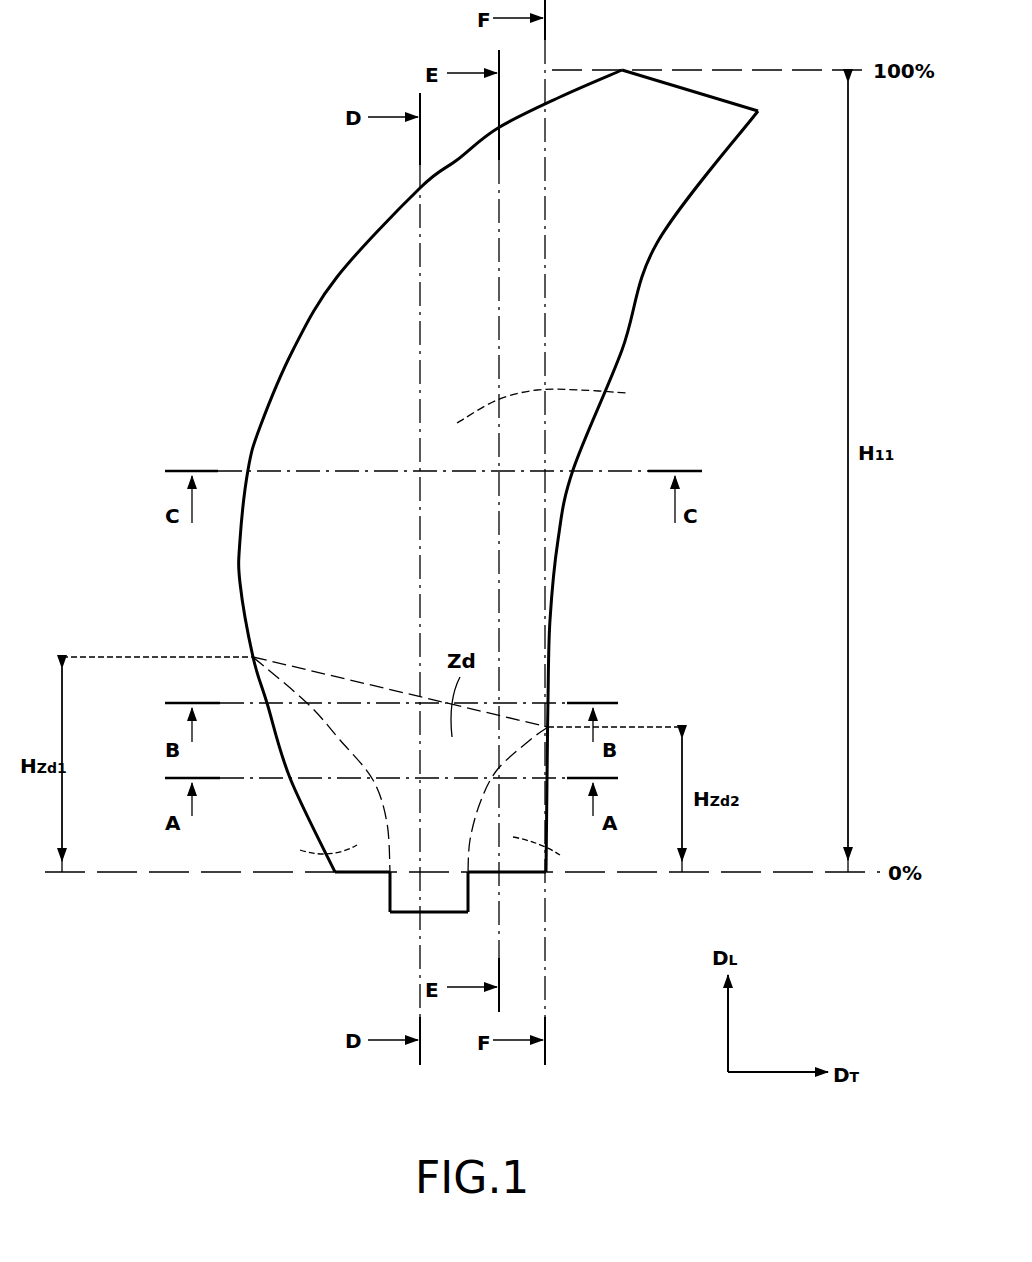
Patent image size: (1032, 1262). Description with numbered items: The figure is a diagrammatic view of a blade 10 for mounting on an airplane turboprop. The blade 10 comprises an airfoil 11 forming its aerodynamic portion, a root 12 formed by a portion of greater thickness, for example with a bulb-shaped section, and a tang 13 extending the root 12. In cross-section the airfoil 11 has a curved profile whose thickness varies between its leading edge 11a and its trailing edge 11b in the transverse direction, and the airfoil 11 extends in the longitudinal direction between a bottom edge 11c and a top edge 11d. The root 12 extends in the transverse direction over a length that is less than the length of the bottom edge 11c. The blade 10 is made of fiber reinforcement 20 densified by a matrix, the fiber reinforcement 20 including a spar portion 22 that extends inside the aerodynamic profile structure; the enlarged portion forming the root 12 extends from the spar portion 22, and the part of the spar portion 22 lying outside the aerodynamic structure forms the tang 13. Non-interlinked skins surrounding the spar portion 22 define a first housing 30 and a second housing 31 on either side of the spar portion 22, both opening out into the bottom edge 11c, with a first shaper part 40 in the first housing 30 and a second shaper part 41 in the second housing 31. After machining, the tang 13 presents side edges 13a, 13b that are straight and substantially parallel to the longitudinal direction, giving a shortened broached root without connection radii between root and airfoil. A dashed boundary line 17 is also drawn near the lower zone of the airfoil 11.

The blade 10 is at (493, 516).
The airfoil 11 is at (493, 516).
The leading edge 11a is at (240, 583).
The trailing edge 11b is at (560, 565).
The bottom edge 11c is at (518, 877).
The top edge 11d is at (733, 102).
The root 12 is at (408, 917).
The tang 13 is at (408, 911).
The side edge 13a is at (390, 893).
The side edge 13b is at (468, 898).
The zone boundary line 17 is at (370, 683).
The fiber reinforcement 20 is at (560, 402).
The spar portion 22 is at (383, 814).
The first housing 30 is at (297, 856).
The first shaper part 40 is at (297, 856).
The second housing 31 is at (569, 852).
The second shaper part 41 is at (569, 852).